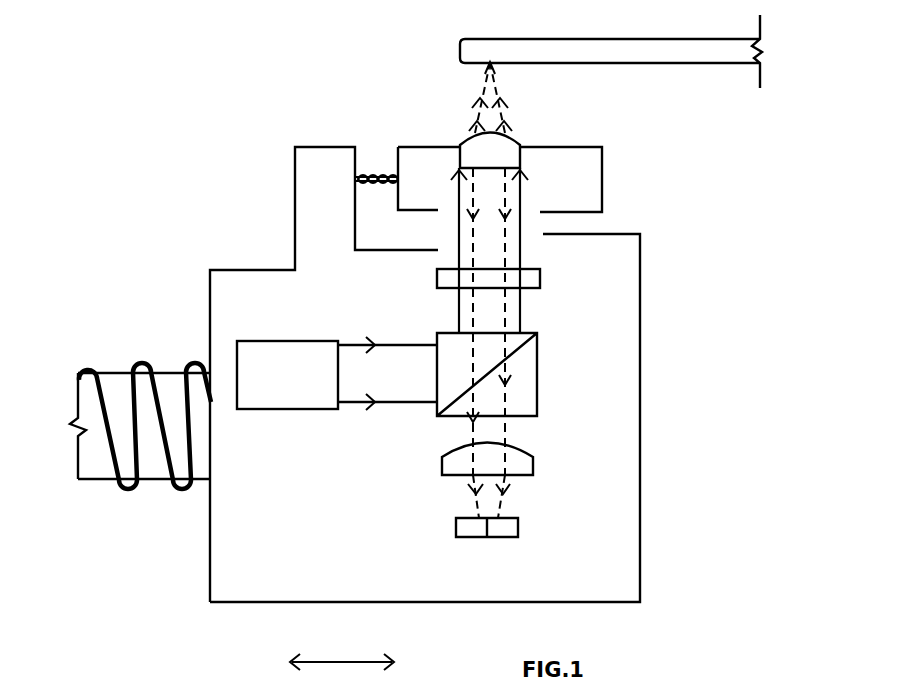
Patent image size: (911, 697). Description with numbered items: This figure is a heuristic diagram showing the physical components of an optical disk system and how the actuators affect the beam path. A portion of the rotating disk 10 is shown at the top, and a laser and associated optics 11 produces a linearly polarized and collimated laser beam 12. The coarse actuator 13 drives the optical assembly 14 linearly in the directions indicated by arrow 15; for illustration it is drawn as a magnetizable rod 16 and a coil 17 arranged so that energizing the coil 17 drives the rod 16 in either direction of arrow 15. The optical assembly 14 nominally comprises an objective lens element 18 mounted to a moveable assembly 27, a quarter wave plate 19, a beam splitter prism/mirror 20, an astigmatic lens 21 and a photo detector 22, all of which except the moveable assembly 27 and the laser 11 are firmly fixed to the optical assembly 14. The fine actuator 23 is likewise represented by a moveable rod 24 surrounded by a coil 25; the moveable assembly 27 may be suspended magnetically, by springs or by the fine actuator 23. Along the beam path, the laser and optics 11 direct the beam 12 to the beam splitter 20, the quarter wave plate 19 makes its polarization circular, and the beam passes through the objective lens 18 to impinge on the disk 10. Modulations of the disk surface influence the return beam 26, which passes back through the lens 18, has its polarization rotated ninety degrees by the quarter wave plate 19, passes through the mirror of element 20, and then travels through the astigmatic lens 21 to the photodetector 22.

The rotating disk 10 is at (510, 52).
The laser and associated optics 11 is at (253, 398).
The laser beam 12 is at (500, 100).
The coarse actuator 13 is at (163, 518).
The optical assembly 14 is at (652, 478).
The arrow 15 is at (342, 652).
The magnetizable rod 16 is at (175, 385).
The coil 17 is at (140, 365).
The objective lens element 18 is at (508, 147).
The quarter wave plate 19 is at (532, 278).
The beam splitter prism/mirror 20 is at (530, 355).
The astigmatic lens 21 is at (522, 470).
The photo detector 22 is at (528, 528).
The fine actuator 23 is at (330, 159).
The moveable rod 24 is at (355, 175).
The coil 25 is at (368, 190).
The return beam 26 is at (505, 122).
The moveable assembly 27 is at (602, 165).